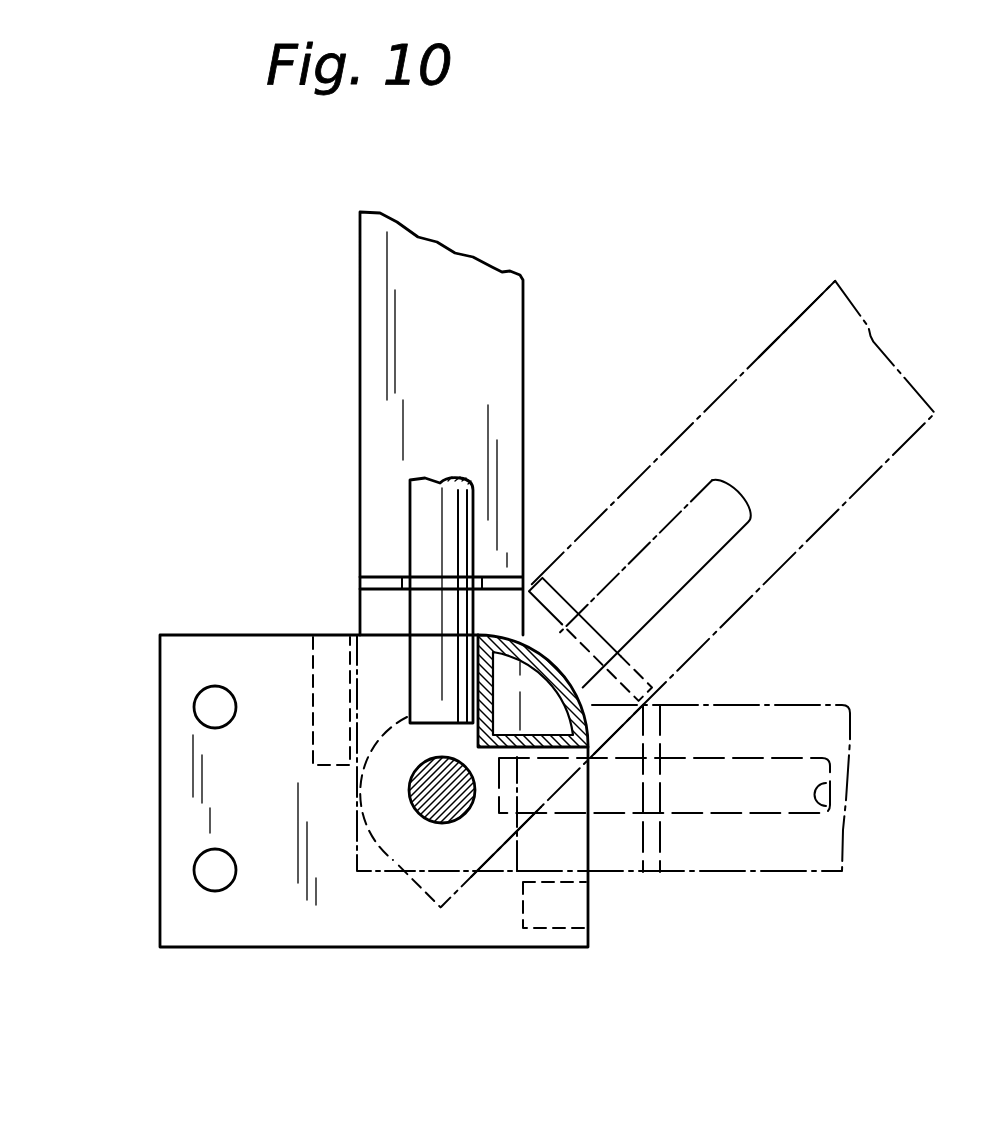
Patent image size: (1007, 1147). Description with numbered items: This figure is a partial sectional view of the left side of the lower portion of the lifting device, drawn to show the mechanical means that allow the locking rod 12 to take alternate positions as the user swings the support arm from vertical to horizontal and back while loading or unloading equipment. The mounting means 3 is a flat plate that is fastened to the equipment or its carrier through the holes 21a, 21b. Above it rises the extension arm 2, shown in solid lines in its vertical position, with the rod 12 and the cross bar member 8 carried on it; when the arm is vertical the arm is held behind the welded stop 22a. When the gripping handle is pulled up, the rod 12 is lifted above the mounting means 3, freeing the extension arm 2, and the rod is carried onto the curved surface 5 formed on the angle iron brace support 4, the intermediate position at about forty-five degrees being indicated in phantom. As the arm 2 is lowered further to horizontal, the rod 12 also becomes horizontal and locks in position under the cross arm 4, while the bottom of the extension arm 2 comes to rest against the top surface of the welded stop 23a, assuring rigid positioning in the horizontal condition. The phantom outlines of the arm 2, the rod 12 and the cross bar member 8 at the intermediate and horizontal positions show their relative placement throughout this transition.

The extension arm 2 is at (378, 300).
The mounting means 3 is at (183, 662).
The angle iron brace support 4 is at (498, 731).
The curved surface 5 is at (545, 670).
The cross bar member 8 is at (376, 580).
The locking rod 12 is at (420, 492).
The hole 21a is at (207, 707).
The hole 21b is at (207, 868).
The welded stop 22a is at (313, 662).
The welded stop 23a is at (573, 917).